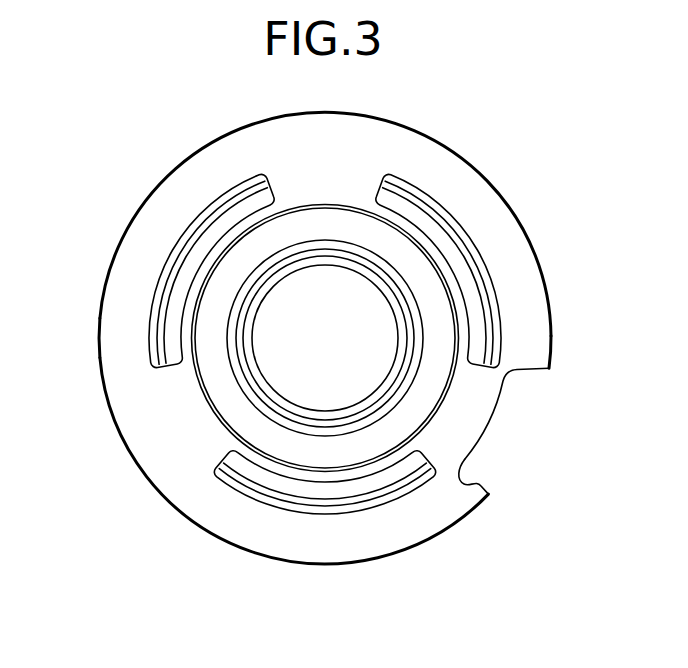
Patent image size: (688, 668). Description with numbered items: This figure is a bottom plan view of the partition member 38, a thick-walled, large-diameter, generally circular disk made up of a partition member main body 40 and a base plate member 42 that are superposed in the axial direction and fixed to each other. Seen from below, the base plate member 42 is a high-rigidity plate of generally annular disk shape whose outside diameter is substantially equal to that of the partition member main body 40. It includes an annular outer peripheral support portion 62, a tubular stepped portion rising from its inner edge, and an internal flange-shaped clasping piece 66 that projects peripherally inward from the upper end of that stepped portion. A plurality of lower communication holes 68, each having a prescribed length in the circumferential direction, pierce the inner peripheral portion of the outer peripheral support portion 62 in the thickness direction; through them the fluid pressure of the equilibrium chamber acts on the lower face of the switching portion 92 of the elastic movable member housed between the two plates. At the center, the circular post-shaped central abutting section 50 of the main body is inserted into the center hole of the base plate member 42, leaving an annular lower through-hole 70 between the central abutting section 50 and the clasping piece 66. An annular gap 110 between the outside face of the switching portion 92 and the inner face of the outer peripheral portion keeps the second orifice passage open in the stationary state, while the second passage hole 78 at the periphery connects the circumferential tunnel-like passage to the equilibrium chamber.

The partition member 38 is at (451, 119).
The partition member main body 40 is at (544, 417).
The base plate member 42 is at (552, 333).
The central abutting section 50 is at (300, 355).
The outer peripheral support portion 62 is at (122, 350).
The clasping piece 66 is at (251, 247).
The lower communication holes 68 is at (184, 253).
The lower through-hole 70 is at (303, 258).
The second passage hole 78 is at (486, 496).
The switching portion 92 is at (468, 280).
The gap 110 is at (378, 490).